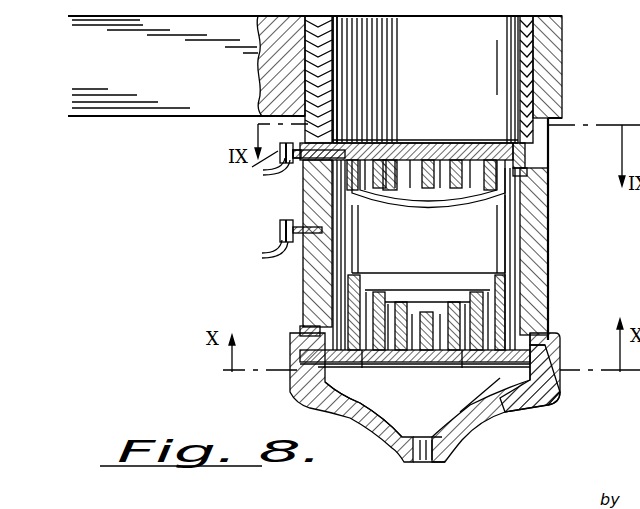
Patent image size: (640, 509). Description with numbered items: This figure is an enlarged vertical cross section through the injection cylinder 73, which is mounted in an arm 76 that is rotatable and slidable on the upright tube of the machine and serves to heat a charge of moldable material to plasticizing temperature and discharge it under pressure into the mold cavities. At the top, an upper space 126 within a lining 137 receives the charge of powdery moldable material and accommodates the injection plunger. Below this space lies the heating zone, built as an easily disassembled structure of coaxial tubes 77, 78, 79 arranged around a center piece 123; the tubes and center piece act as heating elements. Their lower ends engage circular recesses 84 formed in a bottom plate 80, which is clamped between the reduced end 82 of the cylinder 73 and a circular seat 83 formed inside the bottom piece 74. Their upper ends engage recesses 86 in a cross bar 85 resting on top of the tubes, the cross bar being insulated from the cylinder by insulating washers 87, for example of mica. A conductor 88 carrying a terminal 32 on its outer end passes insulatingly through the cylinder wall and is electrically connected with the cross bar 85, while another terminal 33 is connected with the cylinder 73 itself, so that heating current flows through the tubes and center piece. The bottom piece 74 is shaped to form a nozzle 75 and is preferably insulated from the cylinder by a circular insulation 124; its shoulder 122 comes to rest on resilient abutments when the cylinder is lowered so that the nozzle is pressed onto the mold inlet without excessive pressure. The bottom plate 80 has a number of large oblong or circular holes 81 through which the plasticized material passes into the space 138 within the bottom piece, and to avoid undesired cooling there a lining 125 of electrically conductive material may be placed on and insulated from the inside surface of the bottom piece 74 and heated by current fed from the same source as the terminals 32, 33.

The terminal 32 is at (283, 166).
The terminal 33 is at (280, 238).
The injection cylinder 73 is at (540, 246).
The bottom piece 74 is at (548, 350).
The nozzle 75 is at (447, 453).
The arm 76 is at (115, 108).
The tube 77 is at (497, 230).
The tube 78 is at (500, 184).
The tube 79 is at (460, 153).
The bottom plate 80 is at (430, 362).
The holes 81 is at (362, 364).
The reduced end 82 is at (522, 345).
The circular seat 83 is at (556, 392).
The circular recesses 84 is at (497, 380).
The cross bar 85 is at (527, 154).
The recesses 86 is at (392, 158).
The insulating washers 87 is at (527, 173).
The conductor 88 is at (303, 180).
The shoulder 122 is at (335, 410).
The center piece 123 is at (425, 159).
The circular insulation 124 is at (300, 333).
The lining 125 is at (369, 420).
The upper space 126 is at (463, 60).
The lining 137 is at (524, 30).
The space 138 is at (430, 395).